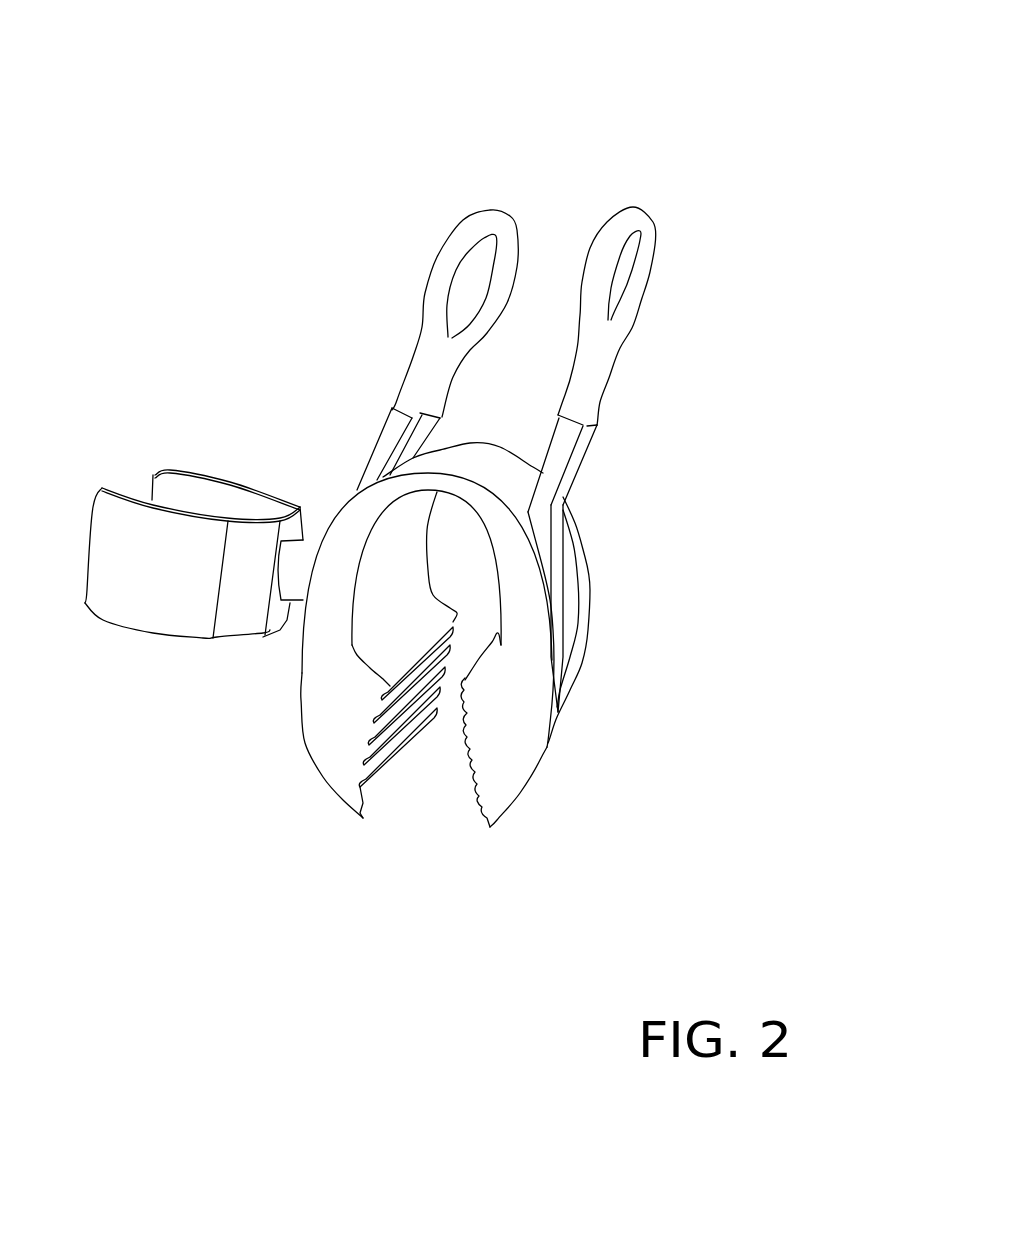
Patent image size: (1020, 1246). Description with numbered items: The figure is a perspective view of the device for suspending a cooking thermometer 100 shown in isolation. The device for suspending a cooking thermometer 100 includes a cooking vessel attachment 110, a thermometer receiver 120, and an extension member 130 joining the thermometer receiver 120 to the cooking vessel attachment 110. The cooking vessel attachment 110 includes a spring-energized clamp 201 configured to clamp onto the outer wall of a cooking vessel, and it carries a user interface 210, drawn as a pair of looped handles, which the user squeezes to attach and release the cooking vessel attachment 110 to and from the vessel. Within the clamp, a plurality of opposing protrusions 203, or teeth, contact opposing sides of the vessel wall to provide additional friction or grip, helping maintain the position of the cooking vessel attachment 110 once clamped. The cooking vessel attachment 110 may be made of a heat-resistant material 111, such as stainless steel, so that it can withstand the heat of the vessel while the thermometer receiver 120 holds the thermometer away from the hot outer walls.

The device for suspending a cooking thermometer 100 is at (590, 87).
The cooking vessel attachment 110 is at (320, 695).
The heat-resistant material 111 is at (575, 541).
The thermometer receiver 120 is at (205, 497).
The extension member 130 is at (303, 557).
The spring-energized clamp 201 is at (497, 462).
The opposing protrusions 203 is at (472, 772).
The user interface 210 is at (463, 233).